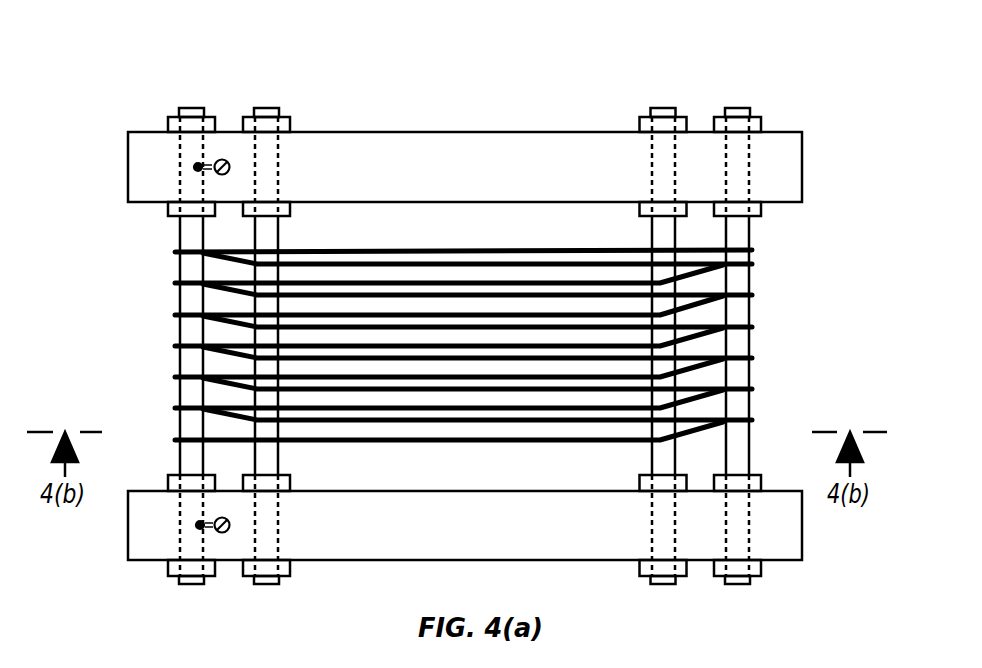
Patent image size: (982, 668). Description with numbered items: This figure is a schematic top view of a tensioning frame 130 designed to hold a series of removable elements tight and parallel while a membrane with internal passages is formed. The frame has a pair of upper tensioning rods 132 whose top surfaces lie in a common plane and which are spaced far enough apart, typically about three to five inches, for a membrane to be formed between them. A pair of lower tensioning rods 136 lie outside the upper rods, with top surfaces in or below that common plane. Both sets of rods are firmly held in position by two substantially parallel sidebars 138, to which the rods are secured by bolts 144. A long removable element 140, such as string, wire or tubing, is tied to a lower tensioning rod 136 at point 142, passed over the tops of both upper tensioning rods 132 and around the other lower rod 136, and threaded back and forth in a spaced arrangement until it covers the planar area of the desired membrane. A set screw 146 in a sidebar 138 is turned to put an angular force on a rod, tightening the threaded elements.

The tensioning frame 130 is at (616, 58).
The upper tensioning rods 132 is at (280, 233).
The lower tensioning rods 136 is at (178, 238).
The sidebars 138 is at (780, 165).
The removable element 140 is at (407, 247).
The tie point 142 is at (752, 250).
The bolts 144 is at (215, 118).
The set screw 146 is at (197, 167).